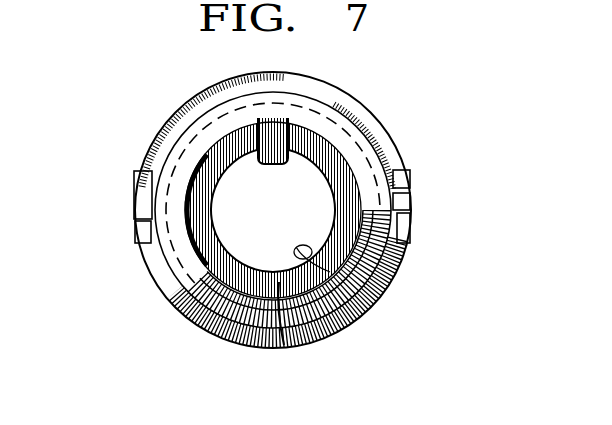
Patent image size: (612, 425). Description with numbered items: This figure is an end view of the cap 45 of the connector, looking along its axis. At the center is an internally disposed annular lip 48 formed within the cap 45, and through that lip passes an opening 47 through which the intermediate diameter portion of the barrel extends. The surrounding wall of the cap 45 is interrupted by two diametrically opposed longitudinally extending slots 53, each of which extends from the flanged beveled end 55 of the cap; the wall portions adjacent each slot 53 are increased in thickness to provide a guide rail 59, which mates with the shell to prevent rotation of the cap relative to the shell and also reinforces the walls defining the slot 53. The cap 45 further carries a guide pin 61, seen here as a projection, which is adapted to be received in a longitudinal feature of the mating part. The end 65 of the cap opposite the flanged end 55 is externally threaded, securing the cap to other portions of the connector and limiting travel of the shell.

The cap 45 is at (151, 79).
The opening 47 is at (371, 305).
The annular lip 48 is at (284, 346).
The slot 53 is at (413, 211).
The flanged beveled end 55 is at (385, 122).
The guide rail 59 is at (412, 184).
The guide pin 61 is at (274, 146).
The end 65 is at (192, 275).